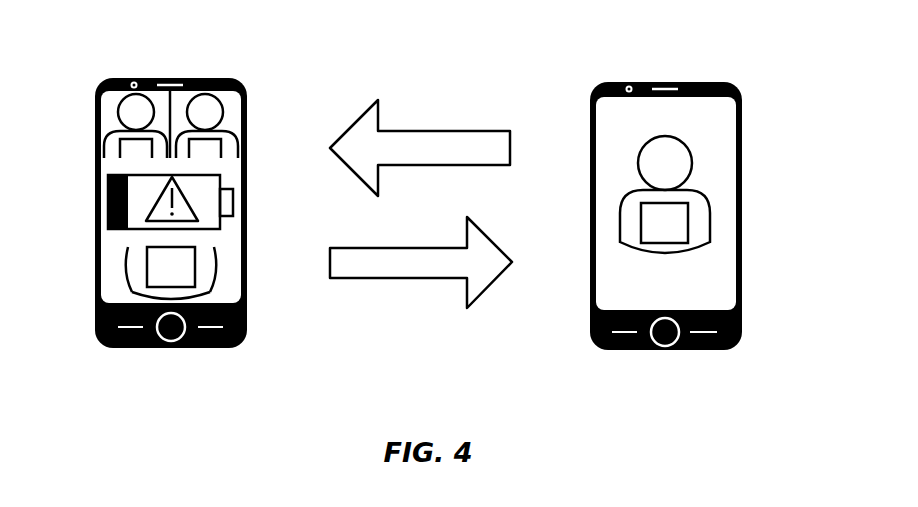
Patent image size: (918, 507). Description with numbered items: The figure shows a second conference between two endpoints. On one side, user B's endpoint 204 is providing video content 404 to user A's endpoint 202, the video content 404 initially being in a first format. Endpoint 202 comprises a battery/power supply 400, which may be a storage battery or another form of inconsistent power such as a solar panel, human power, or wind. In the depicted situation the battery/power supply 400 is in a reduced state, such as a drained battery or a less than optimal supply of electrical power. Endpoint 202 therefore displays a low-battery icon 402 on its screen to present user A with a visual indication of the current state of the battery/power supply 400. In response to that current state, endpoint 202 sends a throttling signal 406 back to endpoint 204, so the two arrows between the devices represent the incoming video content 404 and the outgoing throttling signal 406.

The endpoint 202 is at (180, 176).
The endpoint 204 is at (737, 84).
The battery/power supply 400 is at (180, 195).
The low-battery icon 402 is at (108, 200).
The video content 404 is at (437, 131).
The throttling signal 406 is at (410, 278).